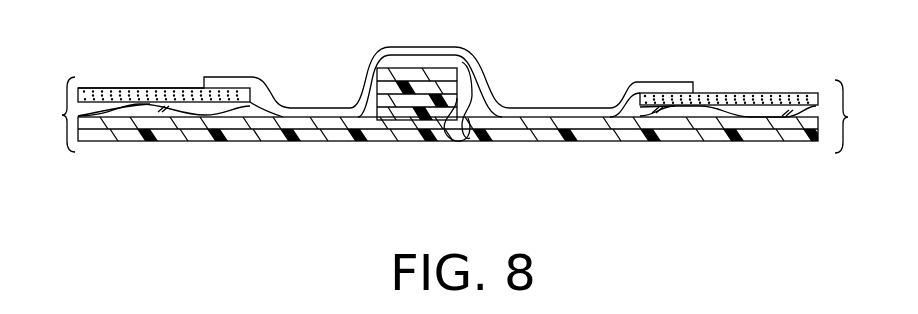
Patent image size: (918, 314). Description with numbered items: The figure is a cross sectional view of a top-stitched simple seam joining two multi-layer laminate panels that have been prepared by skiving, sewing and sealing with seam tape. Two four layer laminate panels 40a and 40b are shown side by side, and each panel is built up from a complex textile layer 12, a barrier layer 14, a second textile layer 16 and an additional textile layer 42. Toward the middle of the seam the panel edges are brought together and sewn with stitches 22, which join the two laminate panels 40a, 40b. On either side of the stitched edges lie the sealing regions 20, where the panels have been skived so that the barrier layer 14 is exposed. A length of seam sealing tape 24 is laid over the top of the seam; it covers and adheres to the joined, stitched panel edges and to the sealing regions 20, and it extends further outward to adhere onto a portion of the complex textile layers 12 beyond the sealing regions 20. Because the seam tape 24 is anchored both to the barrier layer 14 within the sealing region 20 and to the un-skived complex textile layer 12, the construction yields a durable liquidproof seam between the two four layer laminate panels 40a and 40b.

The complex textile layer 12 is at (817, 93).
The barrier layer 14 is at (822, 128).
The second textile layer 16 is at (775, 133).
The sealing regions 20 is at (305, 110).
The stitches 22 is at (458, 143).
The seam sealing tape 24 is at (693, 93).
The four layer laminate panel 40a is at (42, 114).
The four layer laminate panel 40b is at (867, 116).
The additional textile layer 42 is at (810, 108).